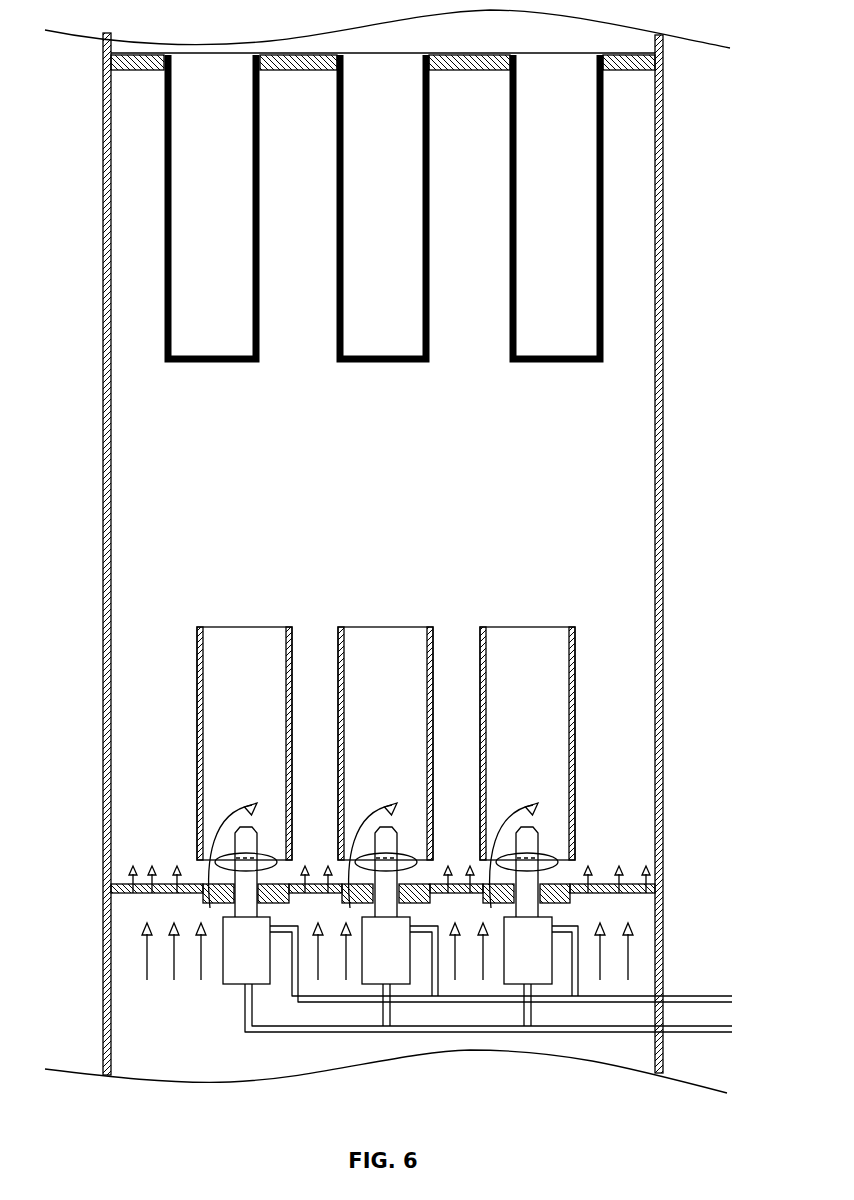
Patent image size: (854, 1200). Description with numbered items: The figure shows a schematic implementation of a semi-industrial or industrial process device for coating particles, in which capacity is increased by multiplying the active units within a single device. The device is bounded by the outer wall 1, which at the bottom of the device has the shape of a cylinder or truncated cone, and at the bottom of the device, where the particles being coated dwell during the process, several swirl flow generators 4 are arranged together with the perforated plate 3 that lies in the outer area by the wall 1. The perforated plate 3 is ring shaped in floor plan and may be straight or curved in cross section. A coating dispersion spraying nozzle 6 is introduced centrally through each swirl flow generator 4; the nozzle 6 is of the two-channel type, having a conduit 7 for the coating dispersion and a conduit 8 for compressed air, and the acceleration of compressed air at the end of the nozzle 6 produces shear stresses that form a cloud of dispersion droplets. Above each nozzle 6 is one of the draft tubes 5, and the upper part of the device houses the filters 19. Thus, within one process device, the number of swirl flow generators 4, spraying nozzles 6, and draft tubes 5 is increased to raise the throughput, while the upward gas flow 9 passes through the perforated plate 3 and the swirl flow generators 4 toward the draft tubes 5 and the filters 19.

The outer wall 1 is at (658, 303).
The filters 19 is at (527, 340).
The draft tubes 5 is at (572, 683).
The perforated plate 3 is at (612, 889).
The swirl flow generator 4 is at (405, 896).
The spraying nozzle 6 is at (242, 970).
The conduit for coating dispersion 7 is at (732, 1029).
The conduit for compressed air 8 is at (732, 999).
The gas flow 9 is at (381, 968).